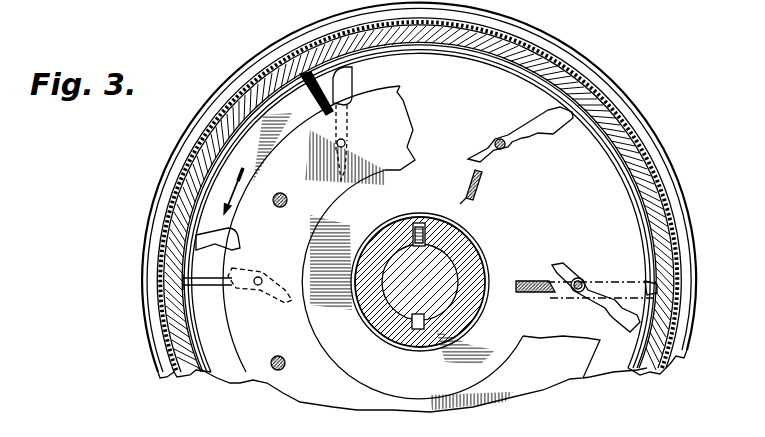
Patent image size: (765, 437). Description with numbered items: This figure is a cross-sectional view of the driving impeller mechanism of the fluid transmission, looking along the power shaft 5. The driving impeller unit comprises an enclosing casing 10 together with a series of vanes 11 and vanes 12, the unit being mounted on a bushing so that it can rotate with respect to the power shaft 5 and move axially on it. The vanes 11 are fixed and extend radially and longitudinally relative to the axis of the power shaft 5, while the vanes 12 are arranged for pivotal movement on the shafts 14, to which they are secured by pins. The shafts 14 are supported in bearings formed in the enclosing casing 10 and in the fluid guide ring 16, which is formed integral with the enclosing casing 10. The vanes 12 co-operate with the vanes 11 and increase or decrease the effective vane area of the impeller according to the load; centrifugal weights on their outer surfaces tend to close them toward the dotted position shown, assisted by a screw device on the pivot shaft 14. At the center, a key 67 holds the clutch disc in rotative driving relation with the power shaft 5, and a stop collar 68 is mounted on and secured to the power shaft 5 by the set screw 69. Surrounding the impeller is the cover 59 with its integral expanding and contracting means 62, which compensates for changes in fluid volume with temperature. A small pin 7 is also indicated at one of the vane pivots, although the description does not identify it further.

The power shaft 5 is at (446, 266).
The pin 7 is at (260, 285).
The enclosing casing 10 is at (612, 119).
The vanes 11 is at (313, 107).
The vanes 12 is at (353, 80).
The shafts 14 is at (346, 142).
The fluid guide ring 16 is at (318, 340).
The cover 59 is at (672, 218).
The expanding and contracting means 62 is at (245, 72).
The key 67 is at (414, 331).
The stop collar 68 is at (482, 264).
The set screw 69 is at (436, 208).